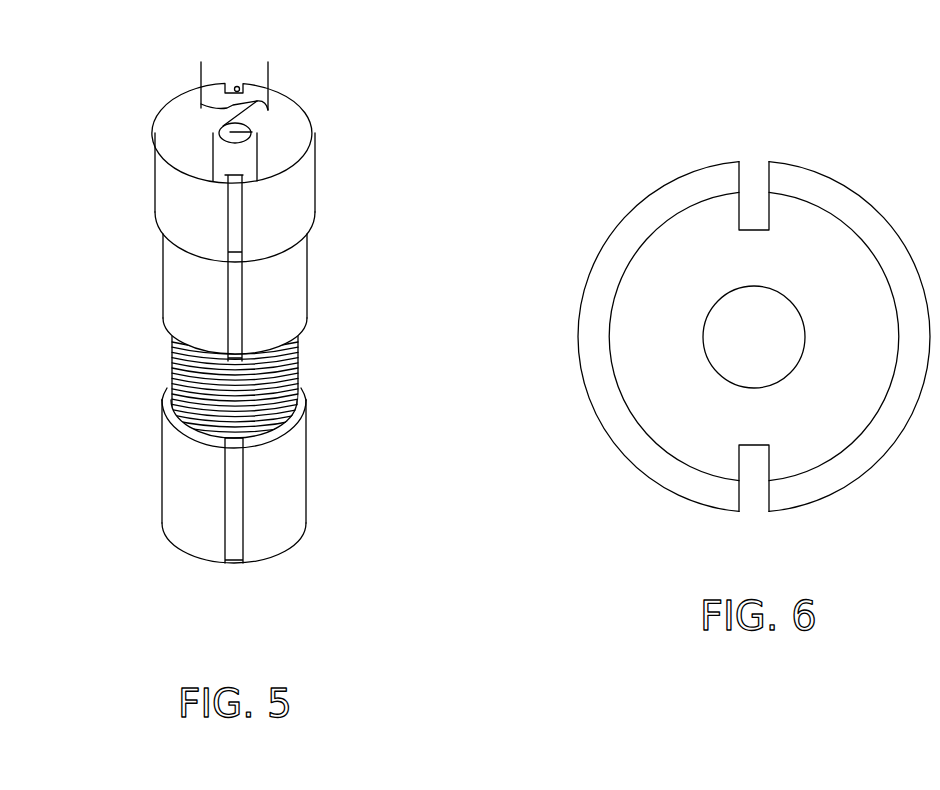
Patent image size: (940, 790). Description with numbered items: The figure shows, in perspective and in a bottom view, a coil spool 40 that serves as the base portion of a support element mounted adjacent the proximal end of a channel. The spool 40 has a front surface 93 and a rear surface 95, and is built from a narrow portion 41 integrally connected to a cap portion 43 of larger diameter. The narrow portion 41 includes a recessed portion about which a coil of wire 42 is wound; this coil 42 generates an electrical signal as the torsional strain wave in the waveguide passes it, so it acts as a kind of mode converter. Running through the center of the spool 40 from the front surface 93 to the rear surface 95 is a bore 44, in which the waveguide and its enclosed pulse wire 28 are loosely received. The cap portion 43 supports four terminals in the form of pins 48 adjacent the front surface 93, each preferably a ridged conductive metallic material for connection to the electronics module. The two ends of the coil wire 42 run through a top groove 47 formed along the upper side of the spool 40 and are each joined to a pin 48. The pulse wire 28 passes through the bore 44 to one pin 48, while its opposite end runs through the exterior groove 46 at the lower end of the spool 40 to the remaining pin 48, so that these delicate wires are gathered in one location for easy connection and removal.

In FIG. 5, the spool 40 is at (374, 102).
In FIG. 6, the spool 40 is at (638, 152).
In FIG. 5, the narrow portion 41 is at (297, 273).
In FIG. 6, the narrow portion 41 is at (673, 435).
In FIG. 5, the coil of wire 42 is at (297, 377).
In FIG. 5, the cap portion 43 is at (295, 217).
In FIG. 6, the cap portion 43 is at (605, 413).
In FIG. 5, the bore 44 is at (228, 127).
In FIG. 6, the bore 44 is at (722, 313).
In FIG. 5, the exterior groove 46 is at (233, 83).
In FIG. 6, the exterior groove 46 is at (750, 510).
In FIG. 5, the top groove 47 is at (233, 566).
In FIG. 6, the top groove 47 is at (757, 160).
In FIG. 5, the pins 48 is at (200, 63).
In FIG. 5, the pulse wire 28 is at (268, 110).
In FIG. 5, the front surface 93 is at (167, 112).
In FIG. 5, the rear surface 95 is at (277, 558).
In FIG. 6, the rear surface 95 is at (833, 435).